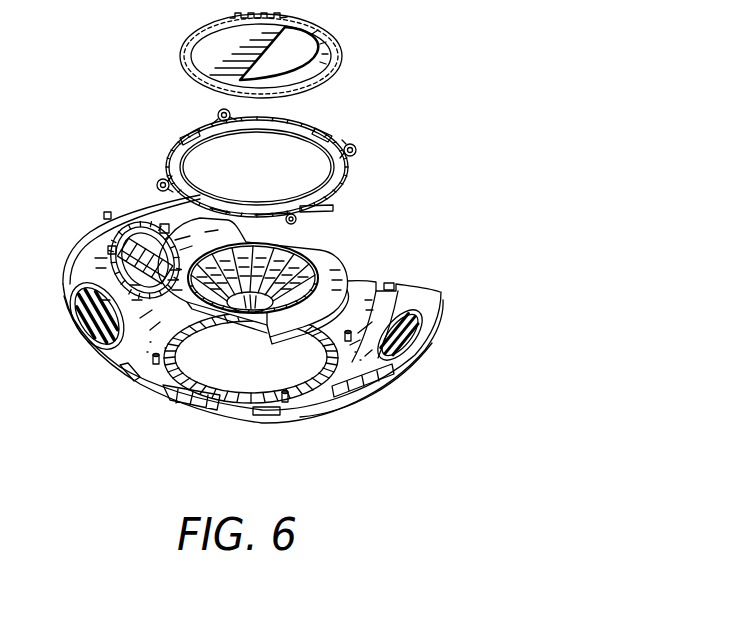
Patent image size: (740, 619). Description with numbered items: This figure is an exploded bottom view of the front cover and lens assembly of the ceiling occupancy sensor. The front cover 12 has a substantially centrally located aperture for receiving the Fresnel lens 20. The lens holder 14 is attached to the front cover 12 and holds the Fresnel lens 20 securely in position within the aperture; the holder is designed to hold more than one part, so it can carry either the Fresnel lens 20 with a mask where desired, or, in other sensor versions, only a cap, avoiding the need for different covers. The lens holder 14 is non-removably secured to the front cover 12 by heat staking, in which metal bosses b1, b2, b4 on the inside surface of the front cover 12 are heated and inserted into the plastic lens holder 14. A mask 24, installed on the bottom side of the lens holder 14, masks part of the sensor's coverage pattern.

The front cover 12 is at (383, 375).
The lens holder 14 is at (283, 165).
The Fresnel lens 20 is at (295, 250).
The mask 24 is at (282, 15).
The metal boss b1 is at (142, 388).
The metal boss b2 is at (268, 416).
The metal boss b4 is at (320, 415).